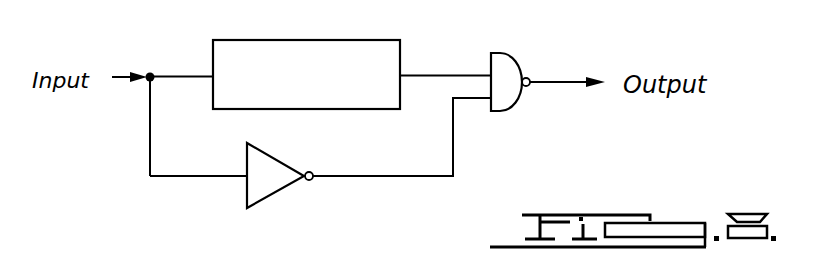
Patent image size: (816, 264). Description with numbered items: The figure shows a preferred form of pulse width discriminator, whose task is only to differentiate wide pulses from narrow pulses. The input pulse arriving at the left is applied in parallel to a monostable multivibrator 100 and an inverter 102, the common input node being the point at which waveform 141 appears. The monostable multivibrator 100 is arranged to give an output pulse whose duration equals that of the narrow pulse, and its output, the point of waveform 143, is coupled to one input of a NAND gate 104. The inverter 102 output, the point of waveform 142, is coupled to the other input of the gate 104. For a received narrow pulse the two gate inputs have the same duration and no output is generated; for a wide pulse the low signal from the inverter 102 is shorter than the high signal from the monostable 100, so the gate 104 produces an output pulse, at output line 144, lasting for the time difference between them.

The monostable multivibrator 100 is at (401, 39).
The inverter 102 is at (255, 190).
The NAND gate 104 is at (498, 101).
The waveform point 141 is at (172, 70).
The waveform point 142 is at (370, 178).
The waveform point 143 is at (443, 72).
The output line 144 is at (558, 78).